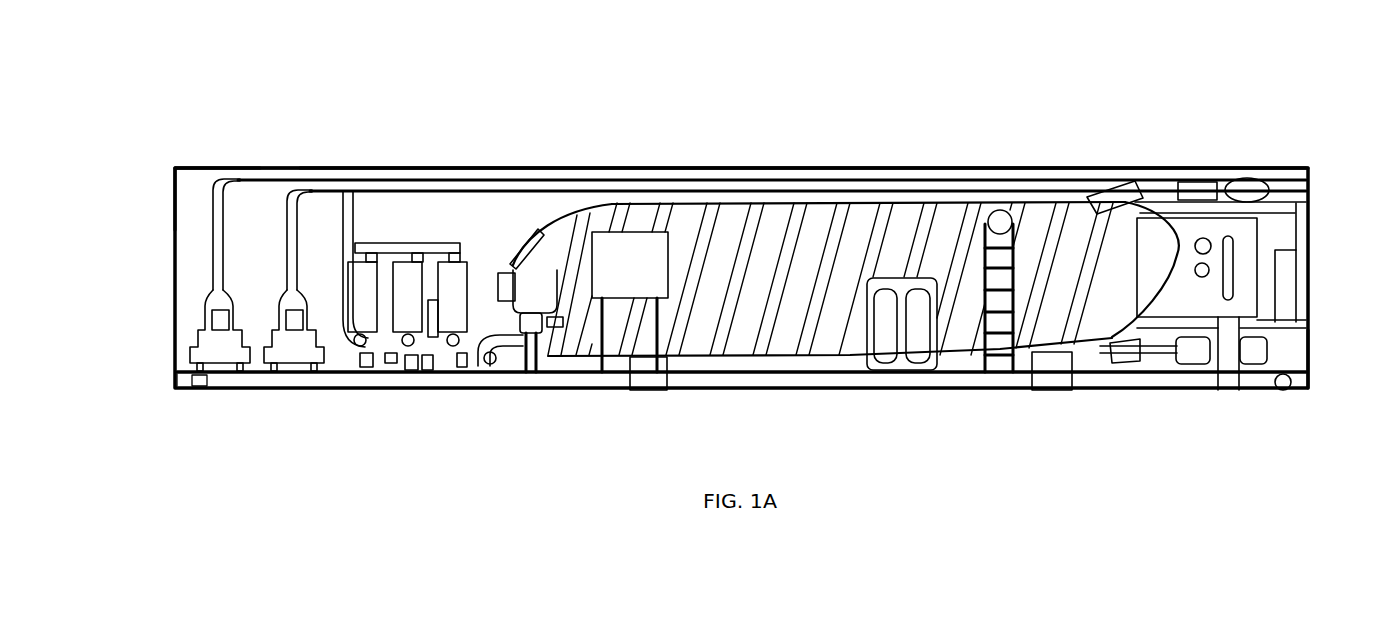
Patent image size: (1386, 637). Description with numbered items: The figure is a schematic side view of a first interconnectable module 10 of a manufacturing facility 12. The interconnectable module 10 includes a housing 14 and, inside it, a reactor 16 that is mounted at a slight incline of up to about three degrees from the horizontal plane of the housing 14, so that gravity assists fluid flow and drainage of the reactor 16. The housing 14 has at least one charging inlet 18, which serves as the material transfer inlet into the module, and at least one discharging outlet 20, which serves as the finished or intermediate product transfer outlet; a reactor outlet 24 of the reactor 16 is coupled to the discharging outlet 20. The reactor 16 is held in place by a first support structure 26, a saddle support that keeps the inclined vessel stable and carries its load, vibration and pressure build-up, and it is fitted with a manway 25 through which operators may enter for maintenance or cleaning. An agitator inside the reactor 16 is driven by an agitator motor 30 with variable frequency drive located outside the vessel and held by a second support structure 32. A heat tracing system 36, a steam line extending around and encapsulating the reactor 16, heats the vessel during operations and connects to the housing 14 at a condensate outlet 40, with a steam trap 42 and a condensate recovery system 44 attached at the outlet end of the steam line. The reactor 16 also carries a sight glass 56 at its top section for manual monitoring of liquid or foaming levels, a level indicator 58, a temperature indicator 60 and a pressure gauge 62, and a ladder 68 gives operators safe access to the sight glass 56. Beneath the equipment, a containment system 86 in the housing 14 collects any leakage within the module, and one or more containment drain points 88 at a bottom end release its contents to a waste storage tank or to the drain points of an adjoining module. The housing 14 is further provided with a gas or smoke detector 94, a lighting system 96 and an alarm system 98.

The interconnectable module 10 is at (808, 138).
The manufacturing facility 12 is at (1207, 145).
The housing 14 is at (548, 166).
The reactor 16 is at (838, 203).
The charging inlet 18 is at (220, 338).
The discharging outlet 20 is at (362, 332).
The reactor outlet 24 is at (600, 364).
The manway 25 is at (528, 242).
The first support structure 26 is at (655, 380).
The agitator motor 30 is at (1209, 307).
The second support structure 32 is at (1228, 383).
The heat tracing system 36 is at (818, 312).
The condensate outlet 40 is at (1307, 352).
The steam trap 42 is at (1190, 356).
The condensate recovery system 44 is at (1255, 353).
The sight glass 56 is at (1002, 210).
The level indicator 58 is at (1234, 241).
The temperature indicator 60 is at (1211, 267).
The pressure gauge 62 is at (1195, 244).
The ladder 68 is at (993, 358).
The containment system 86 is at (918, 382).
The containment drain point 88 is at (176, 380).
The gas or smoke detector 94 is at (186, 167).
The lighting system 96 is at (304, 167).
The alarm system 98 is at (206, 167).